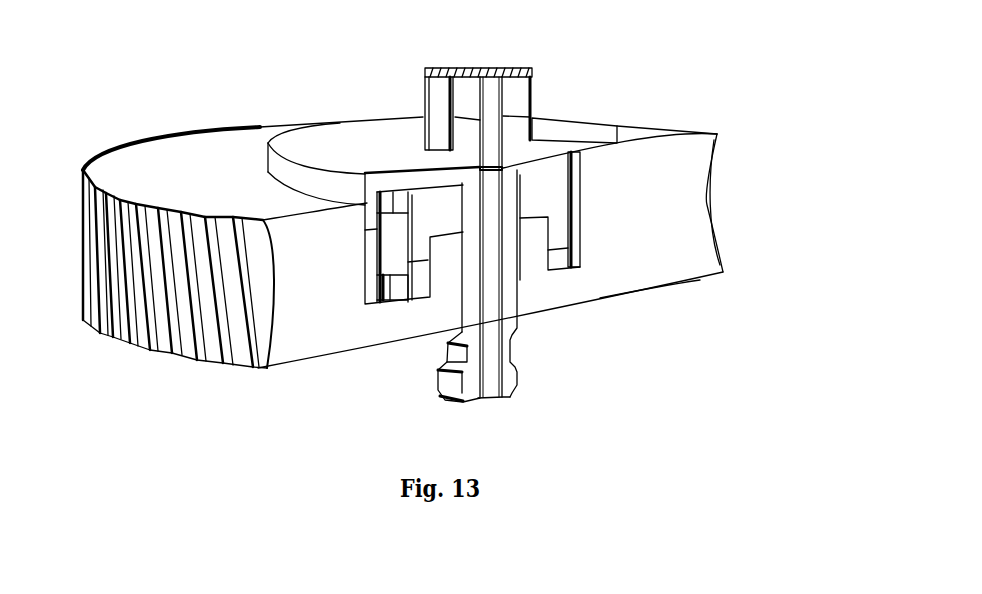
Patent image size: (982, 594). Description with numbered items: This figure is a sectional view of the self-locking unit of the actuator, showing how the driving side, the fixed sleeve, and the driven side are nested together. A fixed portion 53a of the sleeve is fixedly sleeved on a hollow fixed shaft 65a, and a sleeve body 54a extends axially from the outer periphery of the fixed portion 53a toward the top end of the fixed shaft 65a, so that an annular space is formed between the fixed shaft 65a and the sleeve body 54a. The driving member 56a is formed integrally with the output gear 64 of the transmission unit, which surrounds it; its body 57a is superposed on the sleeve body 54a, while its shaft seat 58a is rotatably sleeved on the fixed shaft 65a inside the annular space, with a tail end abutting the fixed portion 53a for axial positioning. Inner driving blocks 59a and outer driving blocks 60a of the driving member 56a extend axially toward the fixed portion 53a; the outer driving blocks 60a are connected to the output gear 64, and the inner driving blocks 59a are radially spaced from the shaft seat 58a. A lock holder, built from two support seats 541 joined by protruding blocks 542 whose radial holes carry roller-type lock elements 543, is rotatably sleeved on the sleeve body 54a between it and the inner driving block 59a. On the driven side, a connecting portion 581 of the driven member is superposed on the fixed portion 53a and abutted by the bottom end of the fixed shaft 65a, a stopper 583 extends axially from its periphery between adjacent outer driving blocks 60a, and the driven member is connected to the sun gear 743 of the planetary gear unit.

The output gear 64 is at (232, 153).
The connecting portion 581 is at (357, 137).
The sun gear 743 is at (426, 70).
The fixed portion 53a is at (532, 188).
The support seat 541 is at (569, 214).
The sleeve body 54a is at (563, 212).
The driving member 56a is at (591, 329).
The body 57a is at (582, 297).
The shaft seat 58a is at (525, 257).
The inner driving block 59a is at (585, 232).
The outer driving block 60a is at (607, 225).
The fixed shaft 65a is at (492, 367).
The protruding block 542 is at (400, 293).
The lock element 543 is at (365, 257).
The stopper 583 is at (392, 260).